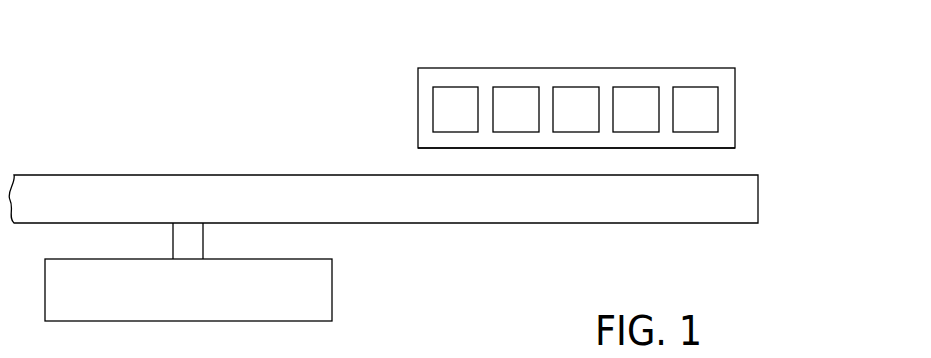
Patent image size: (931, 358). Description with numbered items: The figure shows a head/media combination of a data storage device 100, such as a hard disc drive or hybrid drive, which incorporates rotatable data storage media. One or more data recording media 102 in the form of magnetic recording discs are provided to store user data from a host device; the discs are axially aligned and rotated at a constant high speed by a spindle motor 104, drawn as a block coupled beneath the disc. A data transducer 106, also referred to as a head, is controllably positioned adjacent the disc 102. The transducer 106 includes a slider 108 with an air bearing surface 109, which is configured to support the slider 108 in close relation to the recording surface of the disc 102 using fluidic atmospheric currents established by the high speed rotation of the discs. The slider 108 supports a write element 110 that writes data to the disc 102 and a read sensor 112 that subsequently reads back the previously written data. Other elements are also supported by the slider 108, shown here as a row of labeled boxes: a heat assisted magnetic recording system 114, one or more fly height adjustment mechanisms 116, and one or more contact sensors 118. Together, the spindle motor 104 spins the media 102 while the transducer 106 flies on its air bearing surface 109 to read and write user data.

The data storage device 100 is at (108, 30).
The data recording media 102 is at (248, 185).
The spindle motor 104 is at (332, 290).
The data transducer 106 is at (386, 97).
The slider 108 is at (735, 82).
The air bearing surface 109 is at (707, 148).
The write element 110 is at (455, 87).
The read sensor 112 is at (516, 87).
The heat assisted magnetic recording system 114 is at (576, 87).
The fly height adjustment mechanism 116 is at (636, 87).
The contact sensor 118 is at (694, 87).